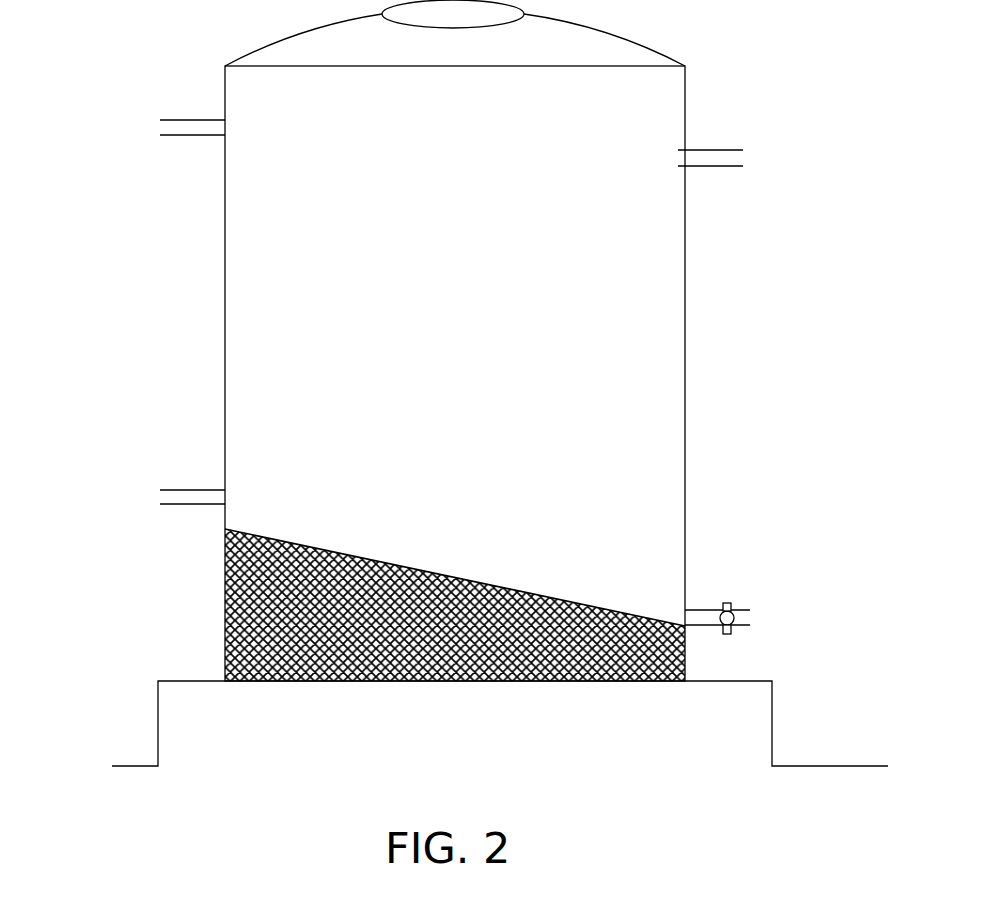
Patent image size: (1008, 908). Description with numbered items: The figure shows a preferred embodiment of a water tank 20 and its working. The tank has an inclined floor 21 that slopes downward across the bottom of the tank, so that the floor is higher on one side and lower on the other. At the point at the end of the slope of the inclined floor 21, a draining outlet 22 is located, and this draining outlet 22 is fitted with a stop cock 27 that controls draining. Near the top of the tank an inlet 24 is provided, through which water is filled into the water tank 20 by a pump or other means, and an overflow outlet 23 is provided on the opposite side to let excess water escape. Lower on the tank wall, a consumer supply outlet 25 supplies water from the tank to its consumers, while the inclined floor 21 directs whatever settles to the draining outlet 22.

The water tank 20 is at (685, 233).
The inclined floor 21 is at (270, 544).
The draining outlet 22 is at (710, 610).
The overflow outlet 23 is at (722, 166).
The inlet 24 is at (188, 120).
The consumer supply outlet 25 is at (188, 490).
The stop cock 27 is at (727, 634).